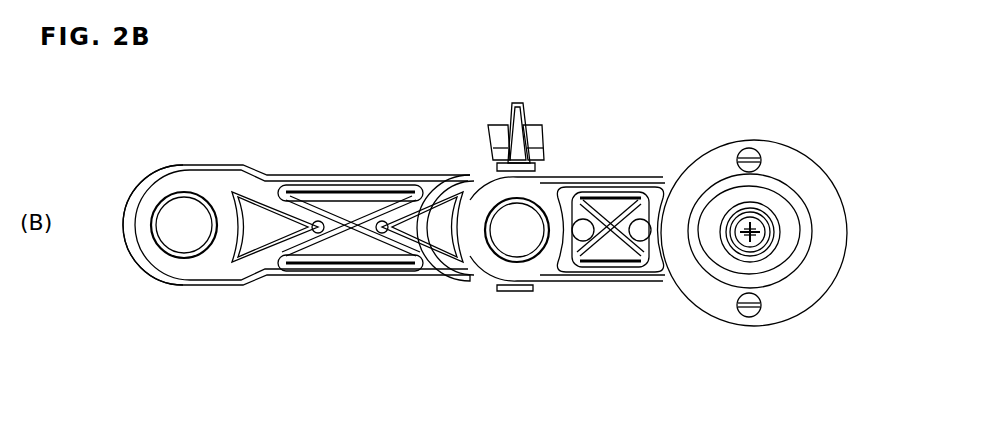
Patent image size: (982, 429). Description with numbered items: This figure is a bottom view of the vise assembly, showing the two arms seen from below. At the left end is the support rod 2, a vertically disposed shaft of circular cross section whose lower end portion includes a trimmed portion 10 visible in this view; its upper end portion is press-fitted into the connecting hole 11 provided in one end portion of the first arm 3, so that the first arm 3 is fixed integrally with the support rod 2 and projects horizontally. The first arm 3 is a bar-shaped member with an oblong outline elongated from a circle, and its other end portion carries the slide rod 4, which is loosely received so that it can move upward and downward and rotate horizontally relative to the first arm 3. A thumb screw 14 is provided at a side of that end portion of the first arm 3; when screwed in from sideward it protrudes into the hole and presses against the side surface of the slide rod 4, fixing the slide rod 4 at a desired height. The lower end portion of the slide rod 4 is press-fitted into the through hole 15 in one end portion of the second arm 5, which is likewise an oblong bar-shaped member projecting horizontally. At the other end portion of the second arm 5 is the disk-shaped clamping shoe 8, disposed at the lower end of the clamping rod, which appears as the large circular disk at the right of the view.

The support rod 2 is at (185, 212).
The first arm 3 is at (352, 183).
The slide rod 4 is at (525, 225).
The second arm 5 is at (632, 185).
The clamping shoe 8 is at (822, 188).
The trimmed portion 10 is at (152, 215).
The connecting hole 11 is at (152, 240).
The thumb screw 14 is at (500, 135).
The through hole 15 is at (497, 262).